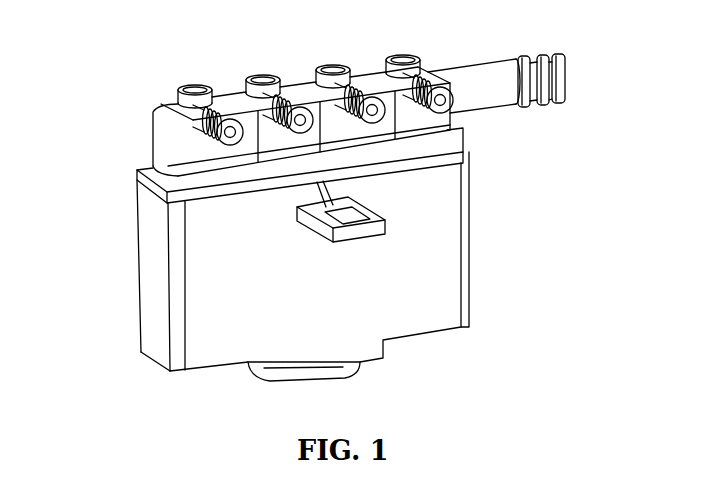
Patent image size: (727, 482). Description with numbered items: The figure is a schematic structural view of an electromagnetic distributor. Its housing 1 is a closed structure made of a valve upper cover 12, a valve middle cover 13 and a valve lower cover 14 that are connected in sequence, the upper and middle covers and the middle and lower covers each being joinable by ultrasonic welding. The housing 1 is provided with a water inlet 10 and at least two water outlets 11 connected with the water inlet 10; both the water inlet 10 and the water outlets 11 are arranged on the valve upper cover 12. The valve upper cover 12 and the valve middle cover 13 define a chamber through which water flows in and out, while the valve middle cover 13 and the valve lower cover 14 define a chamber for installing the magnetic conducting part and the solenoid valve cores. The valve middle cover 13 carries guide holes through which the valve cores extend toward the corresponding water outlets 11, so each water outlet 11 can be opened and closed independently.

The housing 1 is at (347, 201).
The water inlet 10 is at (572, 69).
The water outlet 11 is at (444, 105).
The valve upper cover 12 is at (155, 118).
The valve middle cover 13 is at (156, 176).
The valve lower cover 14 is at (158, 288).